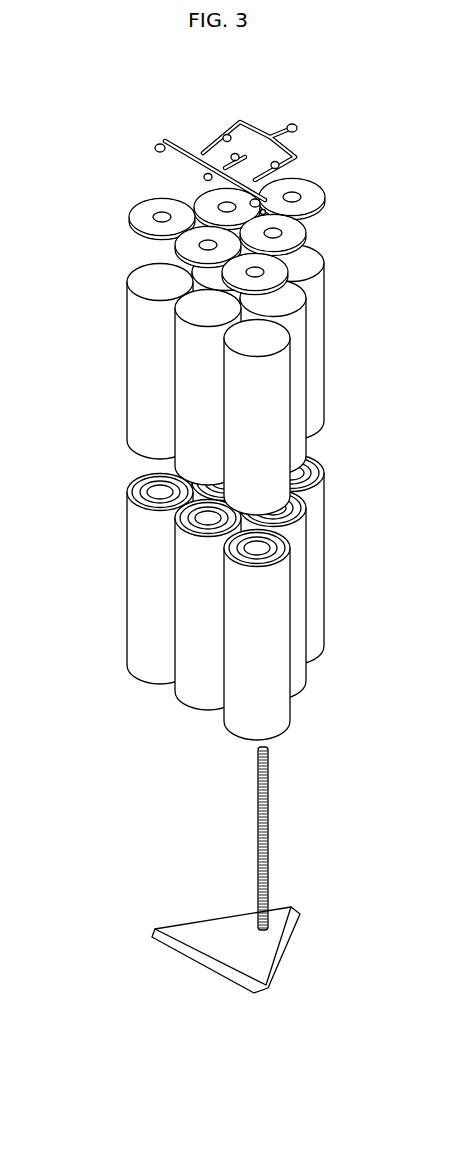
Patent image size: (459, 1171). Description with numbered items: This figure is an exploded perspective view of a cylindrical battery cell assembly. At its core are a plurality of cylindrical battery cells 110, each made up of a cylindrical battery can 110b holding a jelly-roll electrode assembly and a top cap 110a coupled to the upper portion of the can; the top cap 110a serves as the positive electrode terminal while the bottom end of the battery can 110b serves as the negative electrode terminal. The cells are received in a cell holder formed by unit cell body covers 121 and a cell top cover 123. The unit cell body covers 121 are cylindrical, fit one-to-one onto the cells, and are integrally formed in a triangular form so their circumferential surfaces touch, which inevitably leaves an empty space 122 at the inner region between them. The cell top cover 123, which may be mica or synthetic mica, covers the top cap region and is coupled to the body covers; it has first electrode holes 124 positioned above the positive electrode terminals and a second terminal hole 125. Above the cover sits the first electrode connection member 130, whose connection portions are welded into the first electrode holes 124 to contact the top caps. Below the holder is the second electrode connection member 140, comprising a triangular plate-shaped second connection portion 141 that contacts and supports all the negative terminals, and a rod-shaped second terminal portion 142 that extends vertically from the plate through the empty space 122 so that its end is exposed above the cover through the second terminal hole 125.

The cylindrical battery cell 110 is at (217, 598).
The top cap 110a is at (153, 492).
The cylindrical battery can 110b is at (145, 575).
The unit cell body cover 121 is at (232, 380).
The empty space 122 is at (172, 280).
The cell top cover 123 is at (233, 210).
The first electrode hole 124 is at (163, 216).
The second terminal hole 125 is at (283, 182).
The first electrode connection member 130 is at (329, 89).
The second electrode connection member 140 is at (247, 870).
The second connection portion 141 is at (182, 933).
The rod-shaped second terminal portion 142 is at (258, 812).